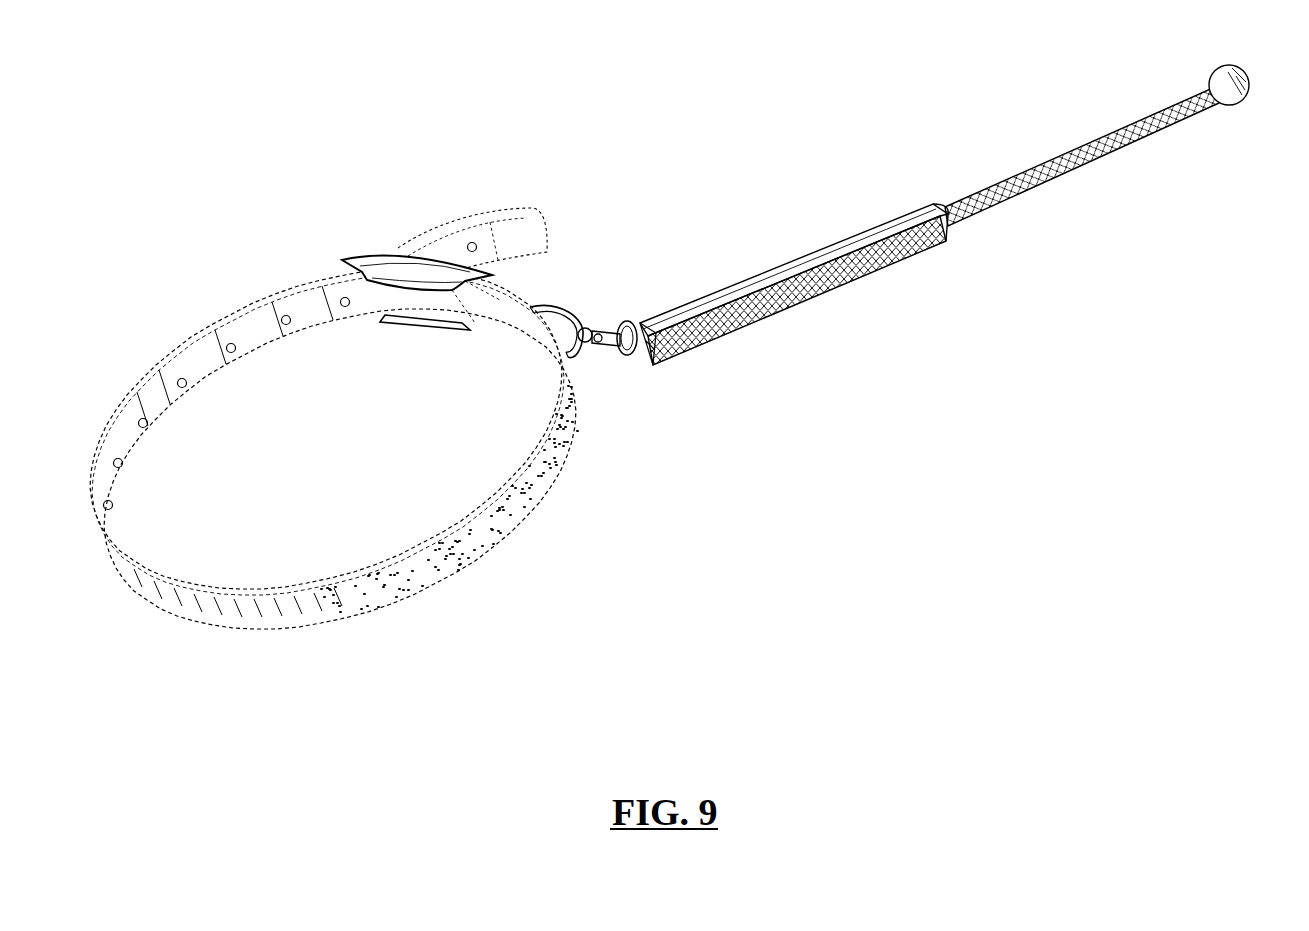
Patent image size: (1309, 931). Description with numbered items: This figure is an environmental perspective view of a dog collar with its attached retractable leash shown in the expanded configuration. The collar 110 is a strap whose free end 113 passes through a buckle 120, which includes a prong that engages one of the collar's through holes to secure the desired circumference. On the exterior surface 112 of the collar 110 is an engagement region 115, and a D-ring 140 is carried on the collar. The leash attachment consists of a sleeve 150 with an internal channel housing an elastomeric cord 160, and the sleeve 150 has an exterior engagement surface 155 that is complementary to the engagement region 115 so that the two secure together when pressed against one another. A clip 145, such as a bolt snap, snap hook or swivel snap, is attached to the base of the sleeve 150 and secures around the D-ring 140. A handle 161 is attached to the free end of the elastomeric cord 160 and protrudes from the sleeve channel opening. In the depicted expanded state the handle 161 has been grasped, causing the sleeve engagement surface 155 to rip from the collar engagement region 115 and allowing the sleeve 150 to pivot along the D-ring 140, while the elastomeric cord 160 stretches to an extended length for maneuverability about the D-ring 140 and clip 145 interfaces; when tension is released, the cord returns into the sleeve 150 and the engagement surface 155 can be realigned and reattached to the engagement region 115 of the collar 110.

The collar 110 is at (228, 592).
The exterior surface 112 is at (293, 622).
The free end 113 is at (535, 218).
The engagement region 115 is at (487, 535).
The buckle 120 is at (410, 265).
The D-ring 140 is at (560, 300).
The clip 145 is at (607, 340).
The sleeve 150 is at (794, 305).
The exterior engagement surface 155 is at (802, 303).
The elastomeric cord 160 is at (1082, 153).
The handle 161 is at (1236, 108).